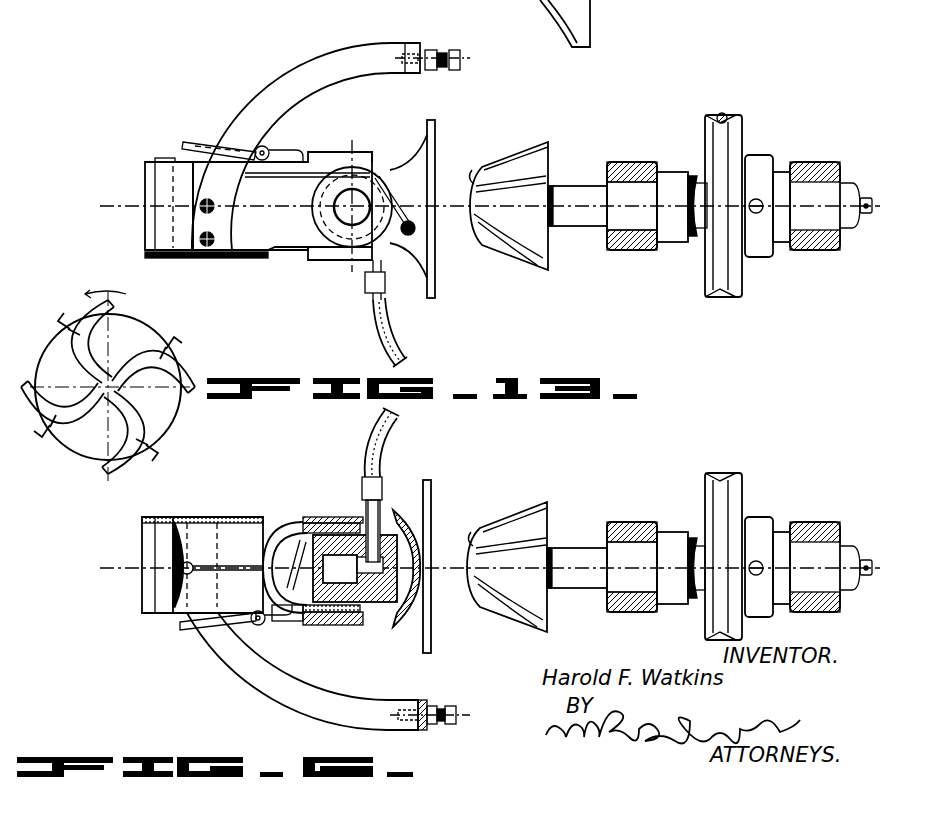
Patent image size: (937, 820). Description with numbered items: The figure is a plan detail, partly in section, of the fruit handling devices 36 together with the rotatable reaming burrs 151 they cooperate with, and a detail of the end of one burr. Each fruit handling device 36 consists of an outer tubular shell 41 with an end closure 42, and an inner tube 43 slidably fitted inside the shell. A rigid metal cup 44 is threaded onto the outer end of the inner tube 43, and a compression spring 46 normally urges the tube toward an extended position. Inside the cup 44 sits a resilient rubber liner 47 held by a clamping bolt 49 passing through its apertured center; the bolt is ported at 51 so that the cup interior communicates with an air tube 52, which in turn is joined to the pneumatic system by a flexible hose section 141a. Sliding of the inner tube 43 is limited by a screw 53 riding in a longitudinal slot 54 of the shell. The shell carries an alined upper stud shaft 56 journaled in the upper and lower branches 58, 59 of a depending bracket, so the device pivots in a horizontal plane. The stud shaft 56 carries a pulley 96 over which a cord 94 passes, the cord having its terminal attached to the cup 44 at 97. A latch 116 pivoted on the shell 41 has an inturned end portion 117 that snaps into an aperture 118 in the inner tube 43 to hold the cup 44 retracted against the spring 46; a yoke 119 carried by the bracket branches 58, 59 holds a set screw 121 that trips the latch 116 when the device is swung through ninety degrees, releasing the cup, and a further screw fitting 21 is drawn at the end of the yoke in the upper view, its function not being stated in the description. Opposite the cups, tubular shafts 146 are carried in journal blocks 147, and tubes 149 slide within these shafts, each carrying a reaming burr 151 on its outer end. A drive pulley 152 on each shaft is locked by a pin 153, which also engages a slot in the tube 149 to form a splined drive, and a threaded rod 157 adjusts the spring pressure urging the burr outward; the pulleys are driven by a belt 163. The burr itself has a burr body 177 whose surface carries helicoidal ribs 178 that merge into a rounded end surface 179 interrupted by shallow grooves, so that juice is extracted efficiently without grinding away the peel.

In FIG. 13, the fitting 21 is at (452, 48).
In FIG. 13, the fruit handling device 36 is at (296, 255).
In FIG. 6, the fruit handling device 36 is at (412, 634).
In FIG. 13, the outer tubular shell 41 is at (376, 160).
In FIG. 6, the outer tubular shell 41 is at (190, 602).
In FIG. 13, the end closure 42 is at (146, 184).
In FIG. 6, the end closure 42 is at (142, 541).
In FIG. 6, the inner tube 43 is at (292, 524).
In FIG. 13, the cup 44 is at (436, 126).
In FIG. 6, the cup 44 is at (432, 486).
In FIG. 6, the compression spring 46 is at (298, 556).
In FIG. 13, the liner 47 is at (408, 206).
In FIG. 6, the liner 47 is at (416, 590).
In FIG. 6, the clamping bolt 49 is at (395, 545).
In FIG. 6, the port 51 is at (385, 565).
In FIG. 13, the air tube 52 is at (366, 283).
In FIG. 6, the air tube 52 is at (383, 486).
In FIG. 6, the screw 53 is at (182, 573).
In FIG. 6, the longitudinal slot 54 is at (247, 578).
In FIG. 13, the upper stud shaft 56 is at (340, 212).
In FIG. 13, the upper branch 58 is at (145, 233).
In FIG. 6, the lower branch 59 is at (148, 579).
In FIG. 13, the cord 94 is at (268, 178).
In FIG. 13, the pulley 96 is at (320, 186).
In FIG. 13, the cord attachment 97 is at (414, 232).
In FIG. 13, the latch 116 is at (287, 151).
In FIG. 6, the latch 116 is at (186, 633).
In FIG. 6, the inturned end portion 117 is at (294, 622).
In FIG. 6, the aperture 118 is at (343, 628).
In FIG. 13, the yoke 119 is at (340, 50).
In FIG. 6, the yoke 119 is at (287, 715).
In FIG. 6, the set screw 121 is at (452, 705).
In FIG. 13, the flexible hose section 141a is at (400, 343).
In FIG. 6, the flexible hose section 141a is at (400, 420).
In FIG. 13, the tubular shaft 146 is at (629, 186).
In FIG. 6, the tubular shaft 146 is at (630, 542).
In FIG. 13, the journal block 147 is at (633, 250).
In FIG. 6, the journal block 147 is at (630, 612).
In FIG. 13, the tube 149 is at (580, 185).
In FIG. 6, the tube 149 is at (577, 548).
In FIG. 13, the reaming burr 151 is at (525, 148).
In FIG. 6, the reaming burr 151 is at (536, 508).
In FIG. 13, the drive pulley 152 is at (742, 133).
In FIG. 6, the drive pulley 152 is at (742, 479).
In FIG. 13, the pin 153 is at (758, 213).
In FIG. 6, the pin 153 is at (757, 575).
In FIG. 13, the threaded rod 157 is at (867, 198).
In FIG. 6, the threaded rod 157 is at (867, 576).
In FIG. 13, the belt 163 is at (723, 113).
In FIG. 13, the burr body 177 is at (175, 370).
In FIG. 13, the helicoidal ribs 178 is at (497, 152).
In FIG. 6, the helicoidal ribs 178 is at (498, 518).
In FIG. 13, the rounded end surface 179 is at (475, 168).
In FIG. 6, the rounded end surface 179 is at (468, 590).